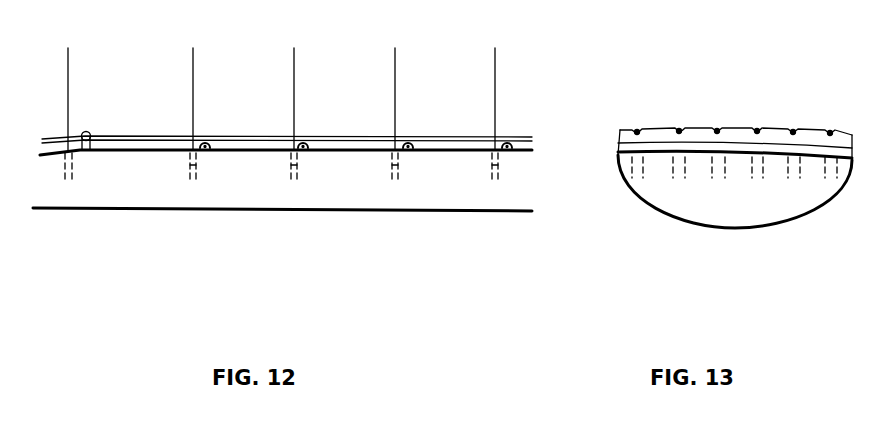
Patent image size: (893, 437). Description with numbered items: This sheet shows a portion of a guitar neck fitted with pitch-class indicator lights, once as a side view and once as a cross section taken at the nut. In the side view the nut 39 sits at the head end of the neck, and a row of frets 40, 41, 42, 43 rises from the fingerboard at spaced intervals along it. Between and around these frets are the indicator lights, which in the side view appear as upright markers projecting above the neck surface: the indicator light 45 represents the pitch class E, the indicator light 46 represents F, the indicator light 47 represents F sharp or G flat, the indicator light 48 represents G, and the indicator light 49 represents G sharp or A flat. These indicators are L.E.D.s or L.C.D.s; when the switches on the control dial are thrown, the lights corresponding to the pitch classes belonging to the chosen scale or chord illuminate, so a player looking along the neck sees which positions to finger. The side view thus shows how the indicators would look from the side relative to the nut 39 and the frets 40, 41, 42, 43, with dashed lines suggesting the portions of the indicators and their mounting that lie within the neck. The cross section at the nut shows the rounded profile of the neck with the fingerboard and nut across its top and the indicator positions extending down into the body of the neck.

The nut 39 is at (91, 133).
The fret 40 is at (207, 145).
The fret 41 is at (305, 146).
The fret 42 is at (410, 146).
The fret 43 is at (510, 146).
The indicator light 45 is at (68, 108).
The indicator light 46 is at (197, 106).
The indicator light 47 is at (304, 100).
The indicator light 48 is at (401, 107).
The indicator light 49 is at (508, 100).